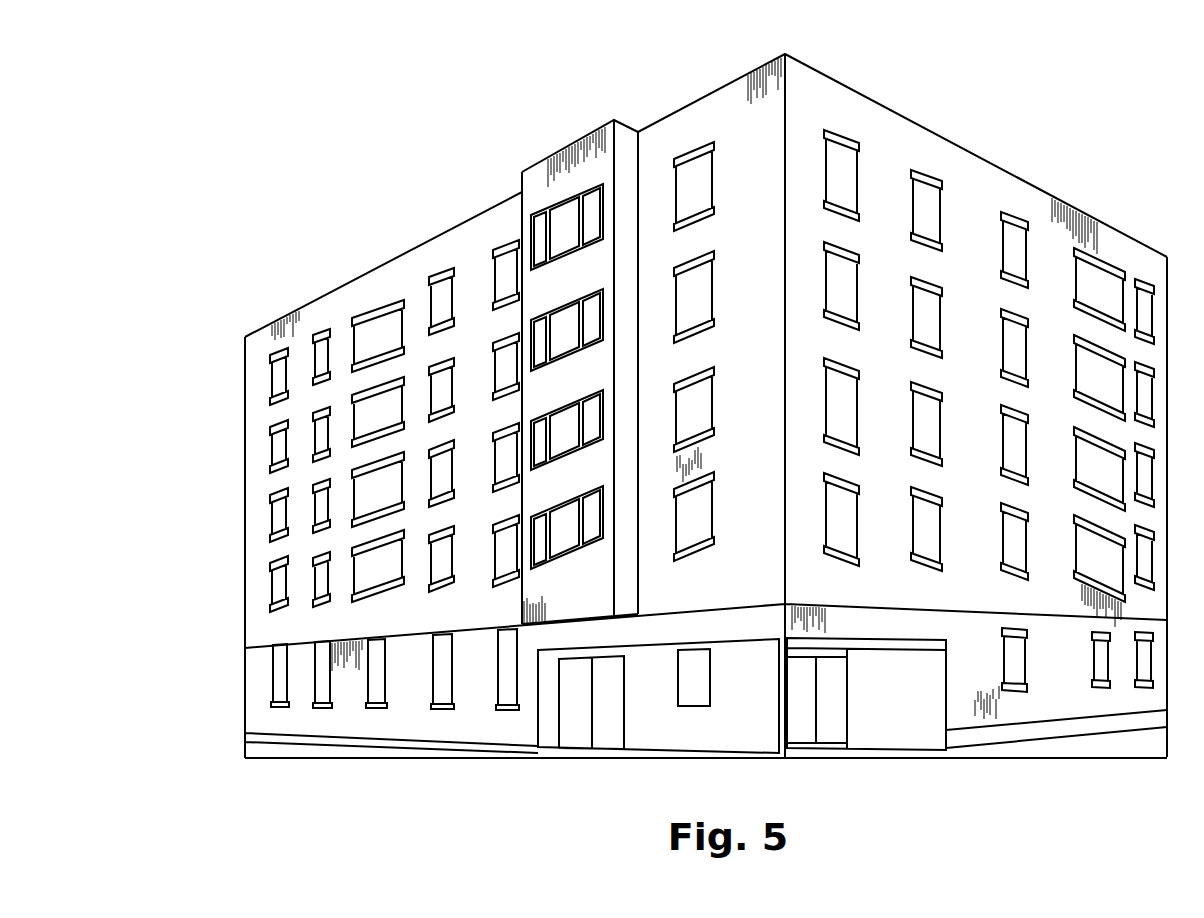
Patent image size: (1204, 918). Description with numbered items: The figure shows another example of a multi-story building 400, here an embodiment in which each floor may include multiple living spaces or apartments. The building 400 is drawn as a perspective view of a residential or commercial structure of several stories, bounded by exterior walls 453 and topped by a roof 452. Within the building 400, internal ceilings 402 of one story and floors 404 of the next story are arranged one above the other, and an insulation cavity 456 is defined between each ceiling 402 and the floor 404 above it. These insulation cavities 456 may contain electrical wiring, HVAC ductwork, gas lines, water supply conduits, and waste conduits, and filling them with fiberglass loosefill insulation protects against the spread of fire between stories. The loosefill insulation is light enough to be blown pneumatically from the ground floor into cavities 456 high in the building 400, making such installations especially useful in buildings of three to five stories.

The multi-story building 400 is at (402, 182).
The ceiling 402 is at (804, 193).
The floor 404 is at (878, 233).
The insulation cavity 456 is at (947, 260).
The roof 452 is at (665, 117).
The exterior wall 453 is at (250, 405).